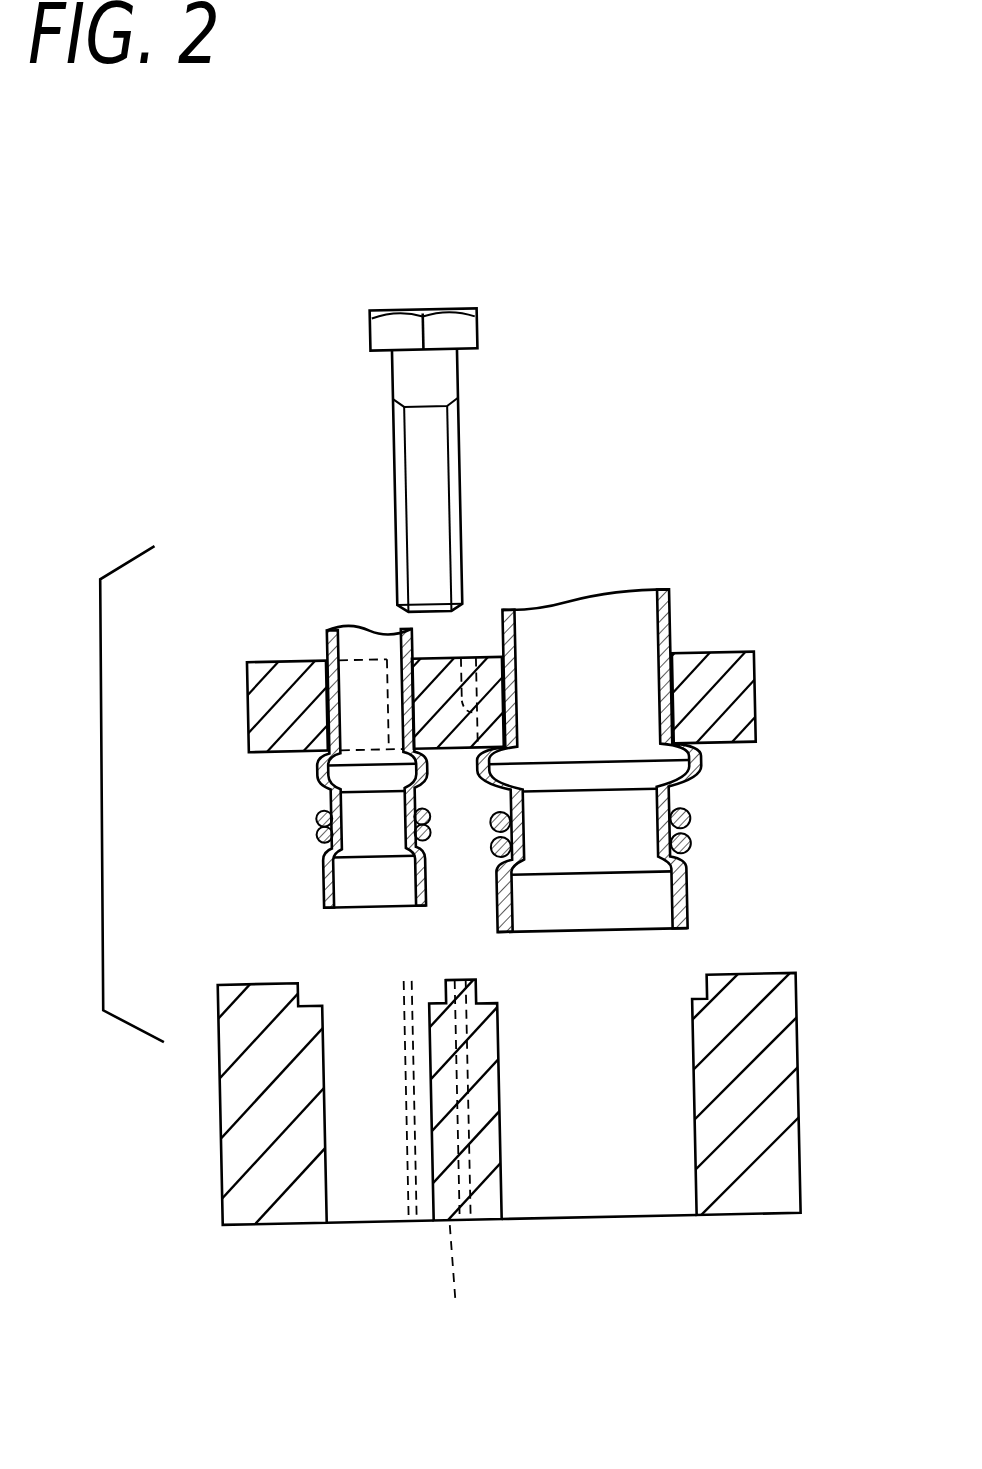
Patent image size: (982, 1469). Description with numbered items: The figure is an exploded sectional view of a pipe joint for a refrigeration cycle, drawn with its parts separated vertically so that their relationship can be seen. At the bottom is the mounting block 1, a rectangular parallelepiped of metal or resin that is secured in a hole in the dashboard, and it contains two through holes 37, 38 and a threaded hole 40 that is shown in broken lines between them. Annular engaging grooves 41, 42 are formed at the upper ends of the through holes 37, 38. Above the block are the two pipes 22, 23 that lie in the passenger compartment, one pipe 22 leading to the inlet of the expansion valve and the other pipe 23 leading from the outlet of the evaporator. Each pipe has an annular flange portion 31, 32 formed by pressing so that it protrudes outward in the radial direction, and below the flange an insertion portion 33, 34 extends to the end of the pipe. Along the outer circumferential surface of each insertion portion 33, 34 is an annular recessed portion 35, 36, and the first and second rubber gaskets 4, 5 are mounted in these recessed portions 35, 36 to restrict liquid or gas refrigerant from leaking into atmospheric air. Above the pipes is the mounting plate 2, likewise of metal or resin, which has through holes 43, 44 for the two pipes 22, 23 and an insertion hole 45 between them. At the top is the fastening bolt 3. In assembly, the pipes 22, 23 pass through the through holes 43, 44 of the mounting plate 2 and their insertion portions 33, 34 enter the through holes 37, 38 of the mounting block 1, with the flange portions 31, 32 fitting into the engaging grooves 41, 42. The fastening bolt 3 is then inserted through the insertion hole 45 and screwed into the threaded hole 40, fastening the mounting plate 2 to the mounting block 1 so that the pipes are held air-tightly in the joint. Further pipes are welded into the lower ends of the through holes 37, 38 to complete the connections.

The mounting block 1 is at (516, 1042).
The mounting plate 2 is at (514, 653).
The fastening bolt 3 is at (413, 328).
The first rubber gasket 4 is at (318, 812).
The second rubber gasket 5 is at (318, 831).
The pipe 22 is at (292, 721).
The pipe 23 is at (657, 725).
The annular flange portion 31 is at (320, 761).
The annular flange portion 32 is at (709, 764).
The insertion portion 33 is at (320, 880).
The insertion portion 34 is at (690, 894).
The annular recessed portion 35 is at (441, 818).
The annular recessed portion 36 is at (472, 981).
The through hole 37 is at (358, 1219).
The through hole 38 is at (581, 1217).
The threaded hole 40 is at (454, 1290).
The annular engaging groove 41 is at (302, 990).
The annular engaging groove 42 is at (704, 996).
The through hole 43 is at (393, 690).
The through hole 44 is at (525, 710).
The insertion hole 45 is at (466, 657).